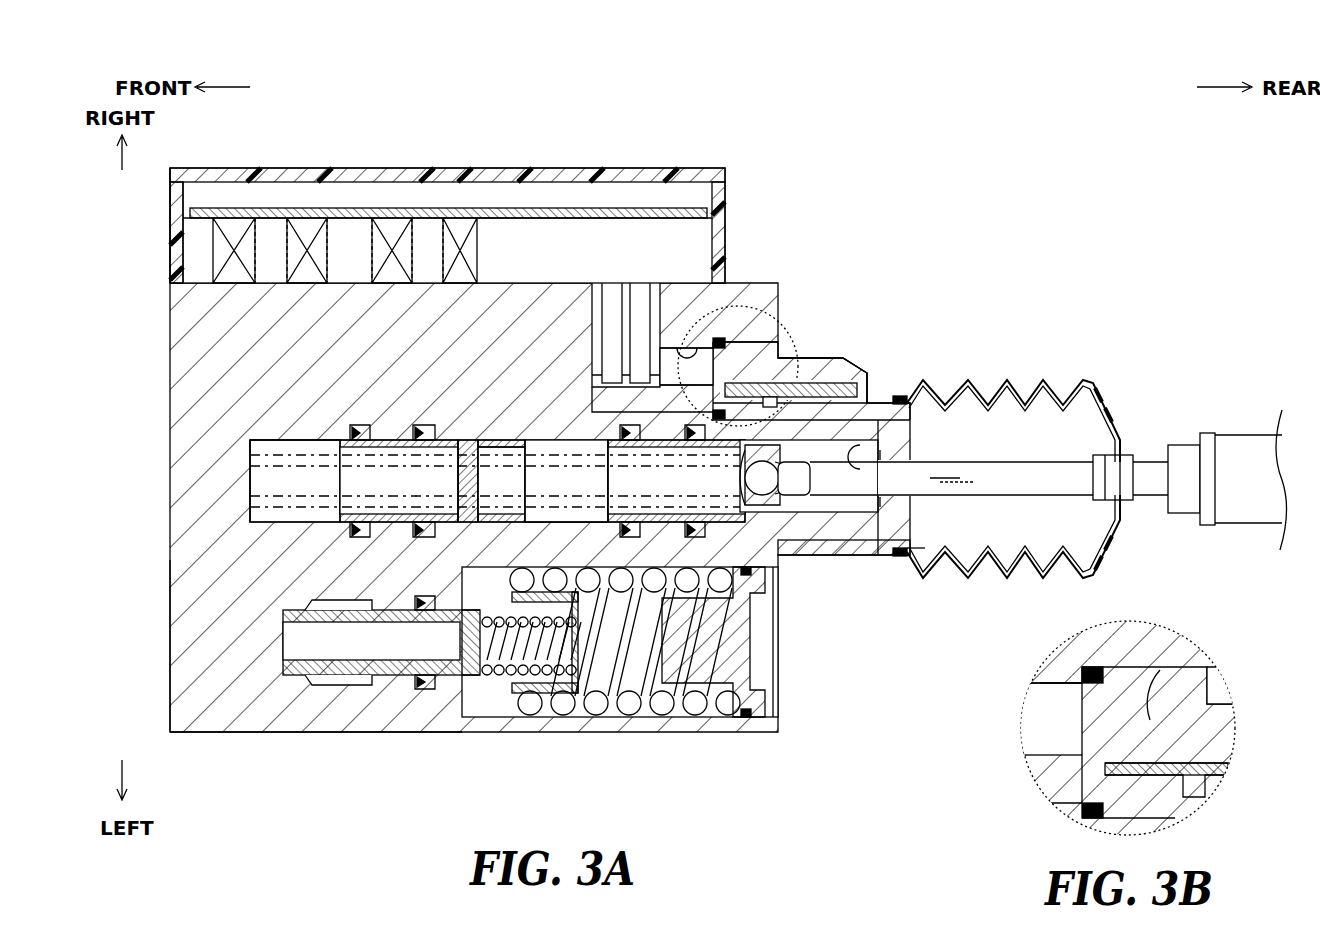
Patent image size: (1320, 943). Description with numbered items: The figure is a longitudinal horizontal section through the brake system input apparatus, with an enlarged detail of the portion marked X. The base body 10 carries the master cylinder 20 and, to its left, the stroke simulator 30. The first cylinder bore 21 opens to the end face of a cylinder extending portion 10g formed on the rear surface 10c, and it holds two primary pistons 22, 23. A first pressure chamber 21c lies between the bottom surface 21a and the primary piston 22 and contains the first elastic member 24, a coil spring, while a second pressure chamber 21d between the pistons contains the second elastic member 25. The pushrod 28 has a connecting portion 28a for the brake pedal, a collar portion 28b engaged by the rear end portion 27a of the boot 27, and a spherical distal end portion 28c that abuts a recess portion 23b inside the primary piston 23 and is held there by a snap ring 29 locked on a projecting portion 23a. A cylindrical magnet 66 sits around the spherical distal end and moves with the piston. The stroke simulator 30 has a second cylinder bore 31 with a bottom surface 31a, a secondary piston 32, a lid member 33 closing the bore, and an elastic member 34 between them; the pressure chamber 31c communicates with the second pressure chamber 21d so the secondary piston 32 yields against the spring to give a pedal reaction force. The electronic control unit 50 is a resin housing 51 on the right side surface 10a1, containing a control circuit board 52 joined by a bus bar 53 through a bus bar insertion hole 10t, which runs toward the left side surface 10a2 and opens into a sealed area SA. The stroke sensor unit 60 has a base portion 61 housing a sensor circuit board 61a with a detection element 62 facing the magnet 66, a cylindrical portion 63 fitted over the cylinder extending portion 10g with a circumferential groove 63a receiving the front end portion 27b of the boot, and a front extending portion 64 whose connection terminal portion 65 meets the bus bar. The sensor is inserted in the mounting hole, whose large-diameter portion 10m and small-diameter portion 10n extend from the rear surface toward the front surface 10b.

The base body 10 is at (158, 334).
The right side surface 10a1 is at (203, 282).
The left side surface 10a2 is at (200, 733).
The front surface 10b is at (170, 652).
The rear surface 10c is at (780, 292).
The cylinder extending portion 10g is at (894, 530).
The large-diameter portion 10m is at (762, 348).
The small-diameter portion 10n is at (688, 350).
The bus bar insertion hole 10t is at (604, 320).
The master cylinder 20 is at (980, 362).
The first cylinder bore 21 is at (884, 440).
The bottom surface 21a is at (268, 440).
The first pressure chamber 21c is at (262, 480).
The second pressure chamber 21d is at (556, 440).
The primary piston 22 is at (478, 440).
The primary piston 23 is at (778, 500).
The projecting portion 23a is at (876, 398).
The recess portion 23b is at (848, 556).
The first elastic member 24 is at (300, 440).
The second elastic member 25 is at (522, 440).
The boot 27 is at (1098, 404).
The rear end portion 27a is at (1124, 456).
The front end portion 27b is at (910, 560).
The pushrod 28 is at (1062, 492).
The connecting portion 28a is at (1242, 445).
The collar portion 28b is at (1120, 482).
The spherical distal end portion 28c is at (884, 556).
The snap ring 29 is at (892, 458).
The stroke simulator 30 is at (586, 686).
The second cylinder bore 31 is at (515, 695).
The bottom surface 31a is at (467, 690).
The pressure chamber 31c is at (505, 690).
The secondary piston 32 is at (545, 692).
The lid member 33 is at (718, 658).
The elastic member 34 is at (633, 708).
The electronic control unit 50 is at (447, 264).
The housing 51 is at (385, 168).
The control circuit board 52 is at (468, 208).
The bus bar 53 is at (600, 283).
The stroke sensor unit 60 is at (864, 343).
The base portion 61 is at (856, 385).
The sensor circuit board 61a is at (822, 365).
The detection element 62 is at (810, 383).
The cylindrical portion 63 is at (902, 396).
The circumferential groove 63a is at (898, 558).
The front extending portion 64 is at (664, 330).
The connection terminal portion 65 is at (572, 440).
The magnet 66 is at (770, 508).
The sealed area SA is at (516, 192).
The portion X is at (752, 306).